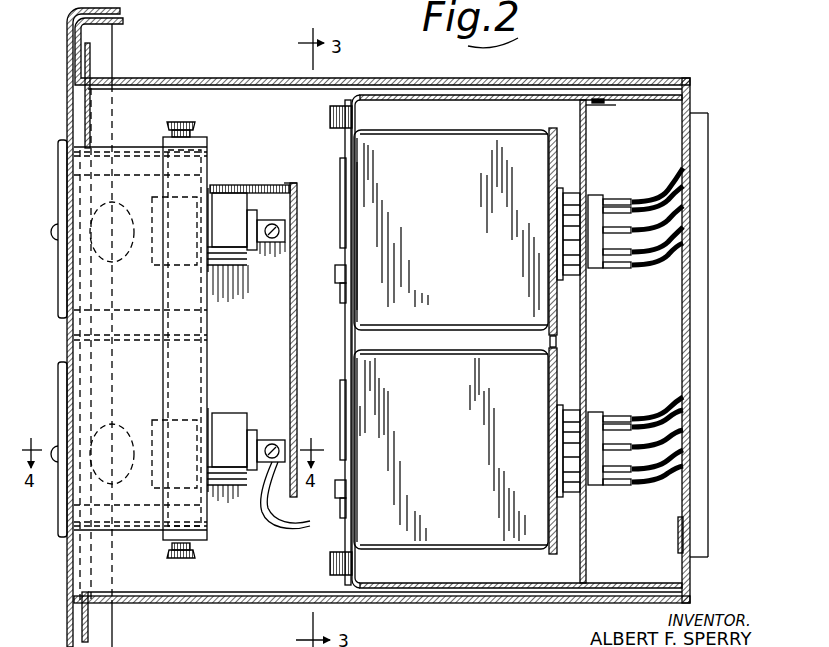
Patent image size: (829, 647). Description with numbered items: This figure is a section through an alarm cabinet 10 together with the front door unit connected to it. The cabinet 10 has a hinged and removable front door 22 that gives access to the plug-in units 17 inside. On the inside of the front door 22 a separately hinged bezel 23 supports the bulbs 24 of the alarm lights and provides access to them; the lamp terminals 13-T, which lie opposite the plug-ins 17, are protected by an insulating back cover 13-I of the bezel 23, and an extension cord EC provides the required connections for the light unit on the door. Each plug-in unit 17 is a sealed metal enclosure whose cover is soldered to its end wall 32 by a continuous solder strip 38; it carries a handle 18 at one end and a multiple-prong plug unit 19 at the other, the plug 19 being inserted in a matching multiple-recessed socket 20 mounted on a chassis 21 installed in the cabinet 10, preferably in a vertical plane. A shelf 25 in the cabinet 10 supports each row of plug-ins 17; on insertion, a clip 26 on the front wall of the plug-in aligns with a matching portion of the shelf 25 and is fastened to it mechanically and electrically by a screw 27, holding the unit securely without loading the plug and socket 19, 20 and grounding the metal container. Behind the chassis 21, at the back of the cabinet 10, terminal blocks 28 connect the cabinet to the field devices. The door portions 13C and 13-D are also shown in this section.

The cabinet 10 is at (666, 62).
The front door 22 is at (66, 114).
The control section 13C is at (56, 184).
The bulb 24 is at (74, 275).
The door 13-D is at (58, 523).
The lamp terminal 13-T is at (280, 177).
The insulating back cover 13-I is at (290, 352).
The bezel 23 is at (205, 330).
The extension cord EC is at (272, 516).
The shelf 25 is at (471, 96).
The plug-in unit 17 is at (520, 128).
The screw 27 is at (330, 118).
The clip 26 is at (344, 142).
The handle 18 is at (340, 222).
The solder strip 38 is at (547, 136).
The chassis 21 is at (587, 116).
The multiple-prong plug unit 19 is at (566, 188).
The multiple-recessed socket 20 is at (600, 198).
The end wall 32 is at (556, 352).
The terminal block 28 is at (708, 146).